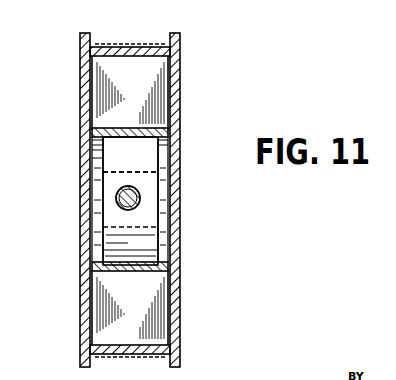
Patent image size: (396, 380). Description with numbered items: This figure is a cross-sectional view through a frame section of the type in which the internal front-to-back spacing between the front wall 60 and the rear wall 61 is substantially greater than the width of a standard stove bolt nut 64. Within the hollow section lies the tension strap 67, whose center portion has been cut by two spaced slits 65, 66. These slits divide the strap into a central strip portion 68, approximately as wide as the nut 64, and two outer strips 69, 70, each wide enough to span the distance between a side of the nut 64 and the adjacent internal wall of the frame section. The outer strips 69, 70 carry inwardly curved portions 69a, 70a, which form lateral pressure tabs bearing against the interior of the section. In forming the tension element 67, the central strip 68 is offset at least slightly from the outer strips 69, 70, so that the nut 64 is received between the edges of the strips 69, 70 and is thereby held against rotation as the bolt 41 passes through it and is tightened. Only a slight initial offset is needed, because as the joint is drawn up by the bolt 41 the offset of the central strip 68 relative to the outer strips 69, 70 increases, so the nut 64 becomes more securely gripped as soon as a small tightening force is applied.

The front wall 60 is at (80, 99).
The rear wall 61 is at (176, 100).
The stove bolt nut 64 is at (113, 172).
The slit 65 is at (90, 155).
The slit 66 is at (168, 143).
The tension strap 67 is at (152, 80).
The central strip portion 68 is at (128, 243).
The outer strip 69 is at (97, 232).
The inwardly curved portion 69a is at (97, 191).
The outer strip 70 is at (164, 197).
The inwardly curved portion 70a is at (163, 222).
The bolt 41 is at (118, 199).